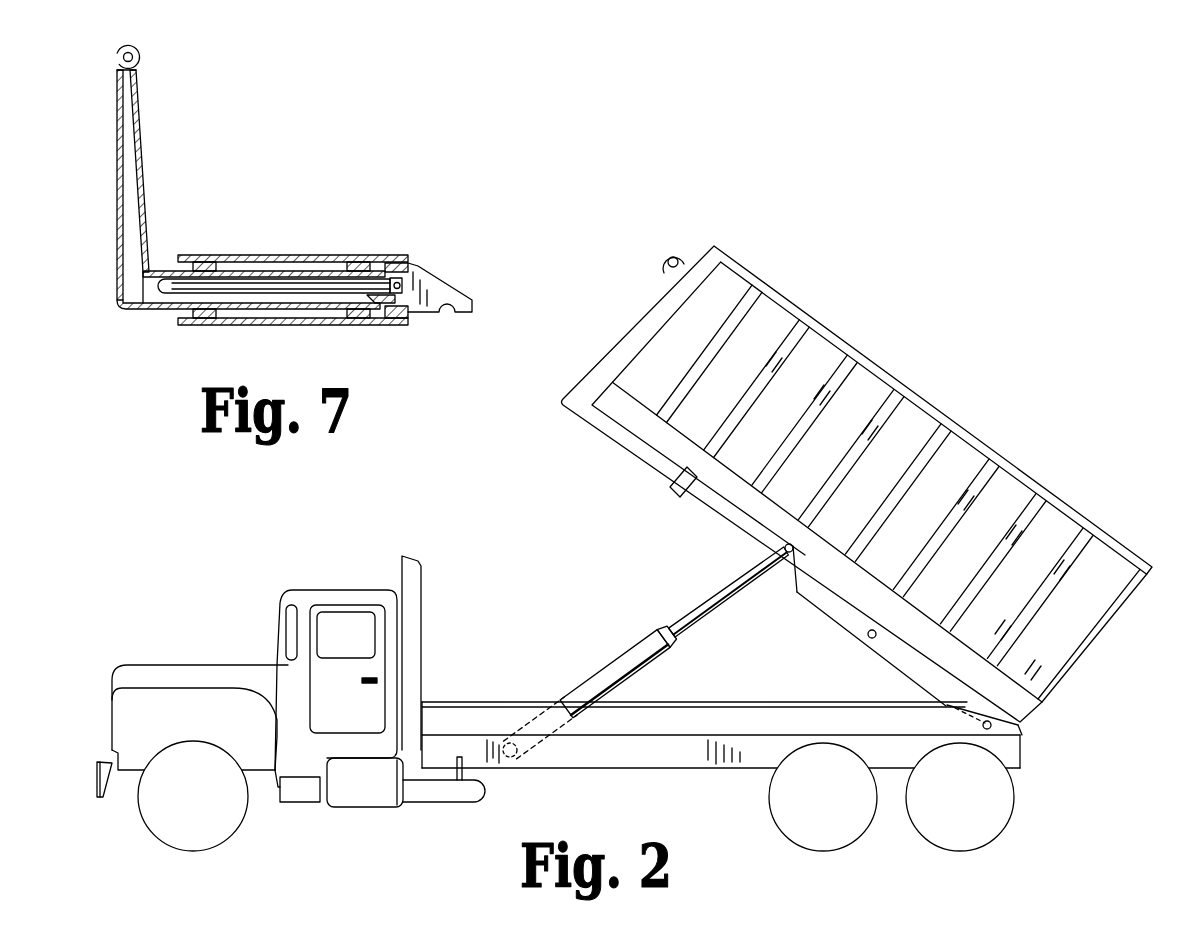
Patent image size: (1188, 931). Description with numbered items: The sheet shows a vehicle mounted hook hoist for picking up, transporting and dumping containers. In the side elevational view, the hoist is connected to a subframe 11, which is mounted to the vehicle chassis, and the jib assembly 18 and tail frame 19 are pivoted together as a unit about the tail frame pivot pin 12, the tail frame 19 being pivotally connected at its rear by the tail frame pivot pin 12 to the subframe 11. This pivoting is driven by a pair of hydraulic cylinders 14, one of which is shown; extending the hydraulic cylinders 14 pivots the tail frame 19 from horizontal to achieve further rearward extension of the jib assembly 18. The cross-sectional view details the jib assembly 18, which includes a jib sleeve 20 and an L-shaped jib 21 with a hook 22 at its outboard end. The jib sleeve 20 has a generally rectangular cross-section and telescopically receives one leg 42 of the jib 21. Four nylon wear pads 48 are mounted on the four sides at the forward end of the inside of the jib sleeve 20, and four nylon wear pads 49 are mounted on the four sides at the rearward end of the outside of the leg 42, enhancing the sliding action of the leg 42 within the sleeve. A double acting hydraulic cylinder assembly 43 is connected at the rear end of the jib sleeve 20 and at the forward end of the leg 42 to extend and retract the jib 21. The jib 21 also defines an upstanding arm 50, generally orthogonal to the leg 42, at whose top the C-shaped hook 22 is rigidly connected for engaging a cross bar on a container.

In FIG. 2, the subframe 11 is at (713, 703).
In FIG. 2, the tail frame pivot pin 12 is at (1007, 735).
In FIG. 2, the hydraulic cylinders 14 is at (619, 644).
In FIG. 7, the jib assembly 18 is at (190, 203).
In FIG. 2, the jib assembly 18 is at (720, 537).
In FIG. 2, the tail frame 19 is at (900, 672).
In FIG. 7, the jib sleeve 20 is at (243, 326).
In FIG. 7, the jib 21 is at (151, 165).
In FIG. 7, the hook 22 is at (141, 52).
In FIG. 7, the leg 42 is at (145, 312).
In FIG. 7, the hydraulic cylinder assembly 43 is at (250, 283).
In FIG. 7, the nylon wear pads 48 is at (211, 259).
In FIG. 7, the nylon wear pads 49 is at (367, 259).
In FIG. 7, the upstanding arm 50 is at (145, 118).